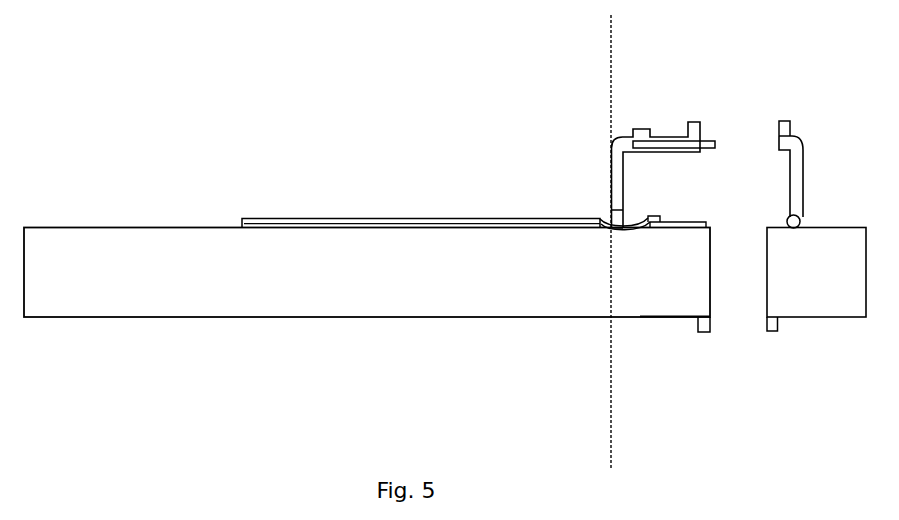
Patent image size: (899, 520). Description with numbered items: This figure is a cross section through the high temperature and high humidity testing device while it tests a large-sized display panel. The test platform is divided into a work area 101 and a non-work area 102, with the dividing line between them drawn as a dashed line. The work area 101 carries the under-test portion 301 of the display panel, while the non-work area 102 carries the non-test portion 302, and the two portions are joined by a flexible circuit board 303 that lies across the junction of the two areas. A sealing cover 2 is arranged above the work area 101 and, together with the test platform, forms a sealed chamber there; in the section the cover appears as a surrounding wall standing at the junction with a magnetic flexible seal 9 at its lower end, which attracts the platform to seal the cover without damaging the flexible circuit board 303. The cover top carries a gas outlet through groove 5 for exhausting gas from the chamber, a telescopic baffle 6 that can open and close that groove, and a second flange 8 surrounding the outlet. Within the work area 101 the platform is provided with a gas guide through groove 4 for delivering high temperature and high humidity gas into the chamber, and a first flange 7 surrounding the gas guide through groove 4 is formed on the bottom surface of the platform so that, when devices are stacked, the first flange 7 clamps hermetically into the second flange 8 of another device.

The sealing cover 2 is at (808, 171).
The gas guide through groove 4 is at (741, 271).
The gas outlet through groove 5 is at (757, 144).
The telescopic baffle 6 is at (675, 142).
The first flange 7 is at (708, 331).
The second flange 8 is at (787, 128).
The magnetic flexible seal 9 is at (612, 218).
The work area 101 is at (698, 373).
The non-work area 102 is at (240, 356).
The under-test portion 301 is at (685, 225).
The non-test portion 302 is at (347, 223).
The flexible circuit board 303 is at (607, 220).